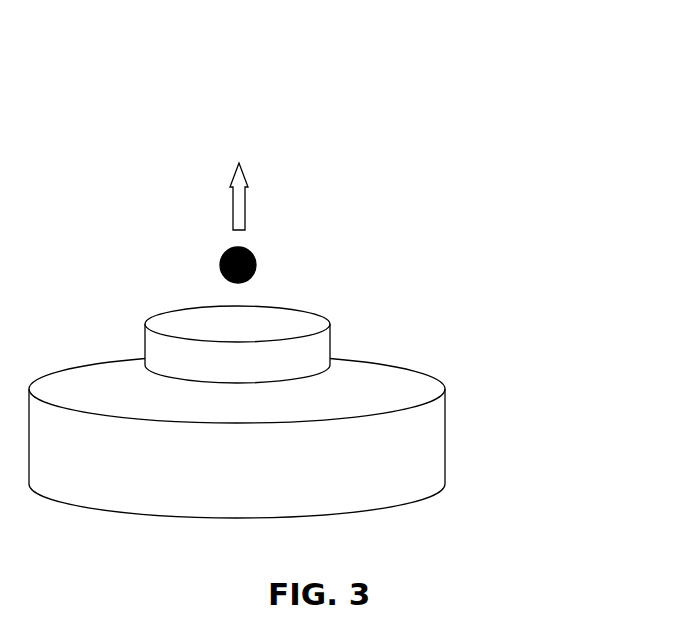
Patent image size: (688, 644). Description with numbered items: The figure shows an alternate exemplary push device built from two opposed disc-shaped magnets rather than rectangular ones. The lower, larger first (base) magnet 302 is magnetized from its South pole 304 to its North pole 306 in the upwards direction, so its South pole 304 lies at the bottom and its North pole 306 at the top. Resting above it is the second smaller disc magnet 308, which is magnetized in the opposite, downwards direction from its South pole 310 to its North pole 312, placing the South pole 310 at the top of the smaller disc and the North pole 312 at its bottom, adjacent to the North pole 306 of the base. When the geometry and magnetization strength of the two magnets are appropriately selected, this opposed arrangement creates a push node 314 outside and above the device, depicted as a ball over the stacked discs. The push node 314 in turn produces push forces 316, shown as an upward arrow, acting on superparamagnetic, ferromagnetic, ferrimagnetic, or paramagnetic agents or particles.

The first (base) magnet 302 is at (410, 475).
The South pole of first magnet 304 is at (253, 495).
The North pole of first magnet 306 is at (253, 443).
The second smaller disc magnet 308 is at (255, 370).
The South pole of second magnet 310 is at (255, 348).
The North pole of second magnet 312 is at (334, 353).
The push node 314 is at (258, 255).
The push forces 316 is at (245, 193).